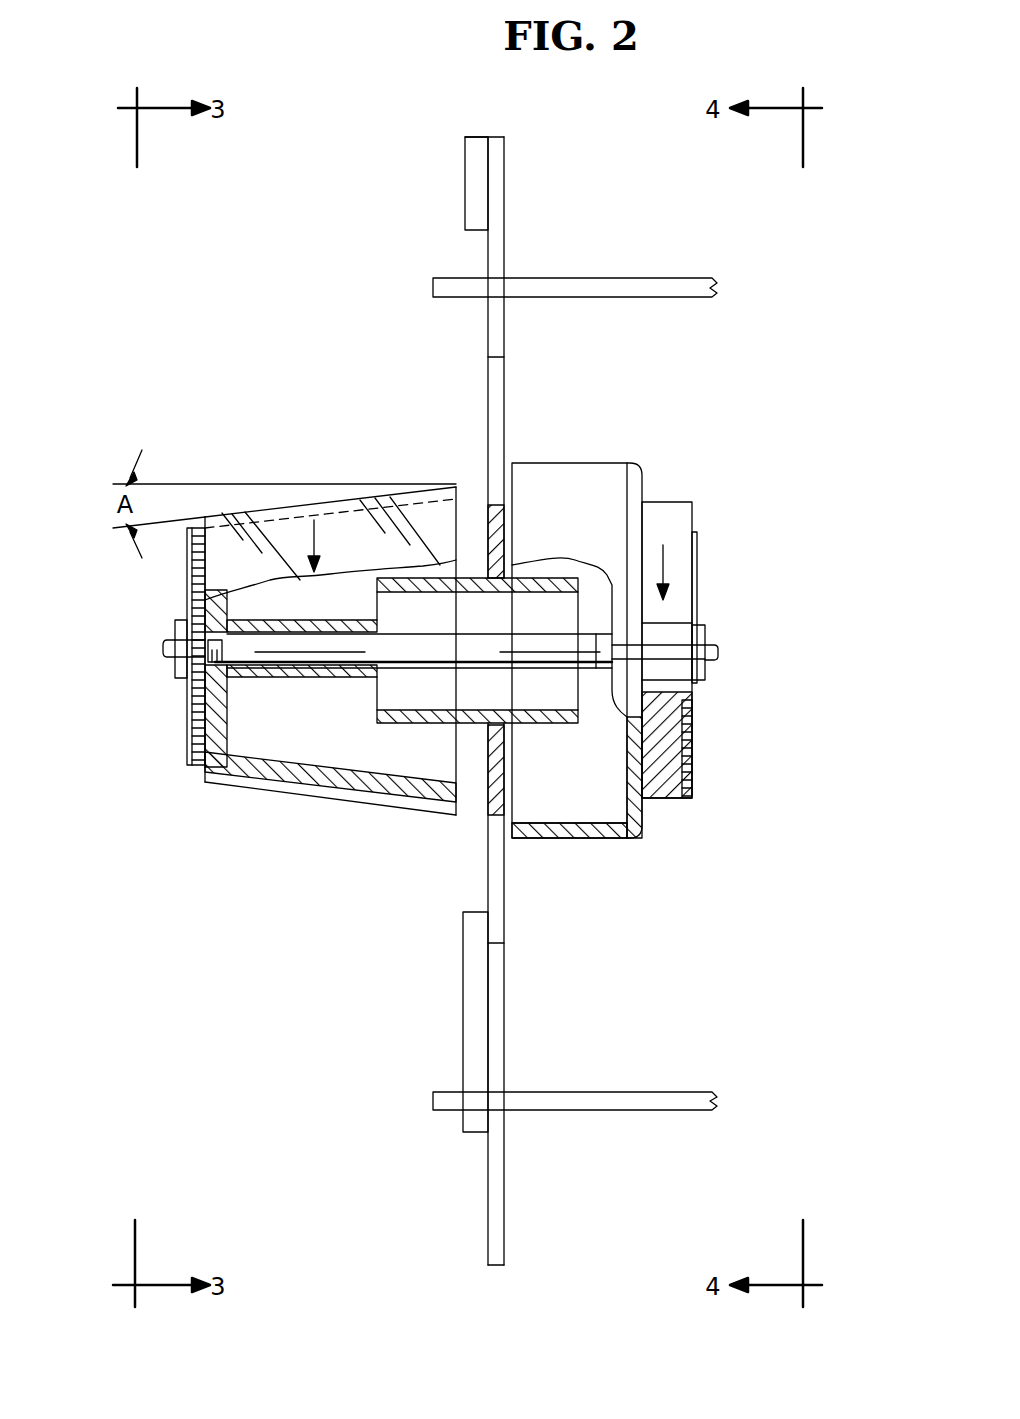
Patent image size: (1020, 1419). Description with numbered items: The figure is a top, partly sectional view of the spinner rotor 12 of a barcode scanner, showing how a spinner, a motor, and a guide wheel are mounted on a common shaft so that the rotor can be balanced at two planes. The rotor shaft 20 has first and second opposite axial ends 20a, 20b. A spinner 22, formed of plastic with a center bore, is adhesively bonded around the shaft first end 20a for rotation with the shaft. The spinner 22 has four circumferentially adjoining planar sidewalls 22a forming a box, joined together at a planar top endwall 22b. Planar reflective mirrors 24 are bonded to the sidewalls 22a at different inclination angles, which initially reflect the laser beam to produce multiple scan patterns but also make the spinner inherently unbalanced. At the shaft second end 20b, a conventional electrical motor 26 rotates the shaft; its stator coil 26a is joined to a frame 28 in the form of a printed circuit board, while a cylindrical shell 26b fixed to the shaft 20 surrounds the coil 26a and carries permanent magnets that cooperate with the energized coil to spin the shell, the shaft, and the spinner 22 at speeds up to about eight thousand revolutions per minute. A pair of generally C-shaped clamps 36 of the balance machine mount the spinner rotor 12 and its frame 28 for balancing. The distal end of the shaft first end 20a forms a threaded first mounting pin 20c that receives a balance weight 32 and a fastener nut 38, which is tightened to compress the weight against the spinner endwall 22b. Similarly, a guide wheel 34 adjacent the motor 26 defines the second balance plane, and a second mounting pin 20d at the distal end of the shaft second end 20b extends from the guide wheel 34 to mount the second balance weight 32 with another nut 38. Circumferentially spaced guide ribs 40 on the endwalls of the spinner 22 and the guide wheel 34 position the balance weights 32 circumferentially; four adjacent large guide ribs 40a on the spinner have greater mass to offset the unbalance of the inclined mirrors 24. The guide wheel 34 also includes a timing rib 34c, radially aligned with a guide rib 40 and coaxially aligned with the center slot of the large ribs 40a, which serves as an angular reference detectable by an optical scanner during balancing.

The spinner rotor 12 is at (350, 910).
The rotor shaft 20 is at (480, 633).
The shaft first end 20a is at (285, 640).
The shaft second end 20b is at (597, 643).
The first mounting pin 20c is at (163, 648).
The second mounting pin 20d is at (718, 652).
The spinner 22 is at (322, 649).
The planar sidewalls 22a is at (330, 548).
The spinner endwall 22b is at (228, 716).
The reflective mirrors 24 is at (290, 503).
The electrical motor 26 is at (581, 643).
The stator coil 26a is at (566, 770).
The cylindrical shell 26b is at (575, 840).
The frame 28 is at (507, 210).
The balance weight 32 is at (178, 587).
The guide wheel 34 is at (708, 508).
The timing rib 34c is at (677, 642).
The C-shaped clamps 36 is at (718, 290).
The fastener nut 38 is at (177, 675).
The guide ribs 40 is at (690, 744).
The large guide ribs 40a is at (186, 732).